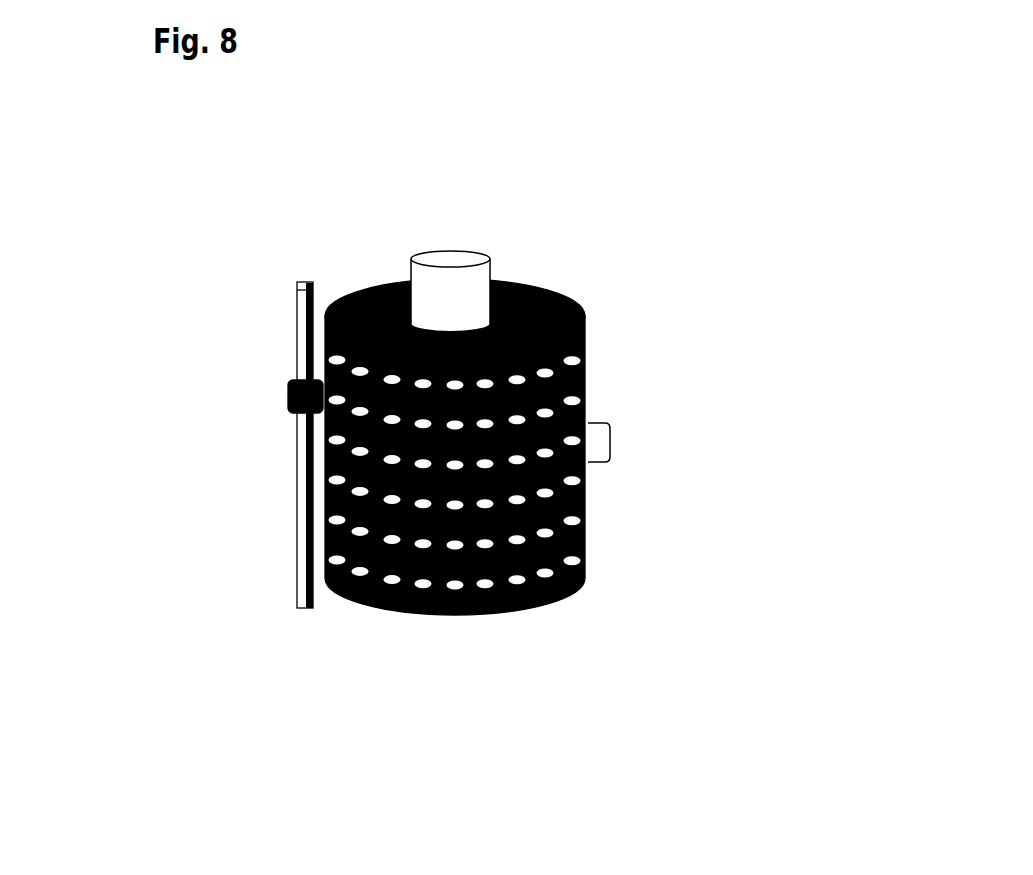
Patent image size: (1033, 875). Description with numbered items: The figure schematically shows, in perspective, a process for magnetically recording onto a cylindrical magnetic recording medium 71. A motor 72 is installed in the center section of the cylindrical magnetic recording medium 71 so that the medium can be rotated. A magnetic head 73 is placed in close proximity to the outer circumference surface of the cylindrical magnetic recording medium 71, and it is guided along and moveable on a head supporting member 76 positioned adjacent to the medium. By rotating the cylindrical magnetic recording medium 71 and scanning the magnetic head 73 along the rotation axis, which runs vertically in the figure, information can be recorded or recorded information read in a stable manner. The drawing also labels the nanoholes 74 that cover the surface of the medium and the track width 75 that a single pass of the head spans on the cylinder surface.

The cylindrical magnetic recording medium 71 is at (465, 628).
The motor 72 is at (478, 283).
The magnetic head 73 is at (276, 402).
The nanohole 74 is at (585, 373).
The track width 75 is at (624, 443).
The head supporting member 76 is at (285, 545).